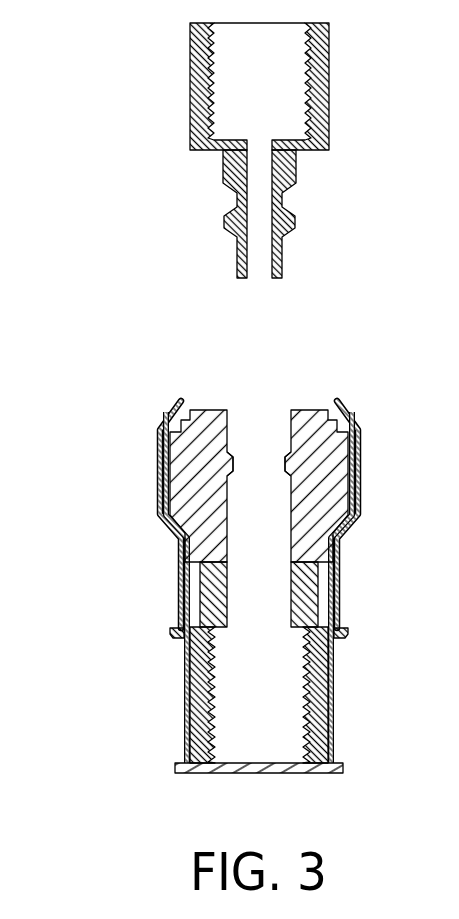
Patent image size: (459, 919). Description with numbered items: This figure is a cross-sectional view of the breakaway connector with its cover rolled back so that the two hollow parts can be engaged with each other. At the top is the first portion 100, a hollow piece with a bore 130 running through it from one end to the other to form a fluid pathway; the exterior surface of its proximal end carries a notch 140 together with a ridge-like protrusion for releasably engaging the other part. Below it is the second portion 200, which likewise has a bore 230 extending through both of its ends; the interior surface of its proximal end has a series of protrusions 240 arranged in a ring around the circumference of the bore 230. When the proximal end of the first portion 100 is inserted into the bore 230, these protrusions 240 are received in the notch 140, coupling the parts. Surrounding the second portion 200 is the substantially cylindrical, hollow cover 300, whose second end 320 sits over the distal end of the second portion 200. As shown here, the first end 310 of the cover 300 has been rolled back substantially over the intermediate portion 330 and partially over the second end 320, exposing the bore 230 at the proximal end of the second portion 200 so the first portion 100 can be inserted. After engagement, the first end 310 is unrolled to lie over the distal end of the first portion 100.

The first portion 100 is at (110, 63).
The bore 130 is at (257, 82).
The notch 140 is at (238, 205).
The second portion 200 is at (182, 454).
The bore 230 is at (268, 583).
The series of protrusions 240 is at (233, 461).
The cover 300 is at (170, 714).
The first end 310 is at (182, 581).
The second end 320 is at (340, 655).
The intermediate portion 330 is at (160, 503).